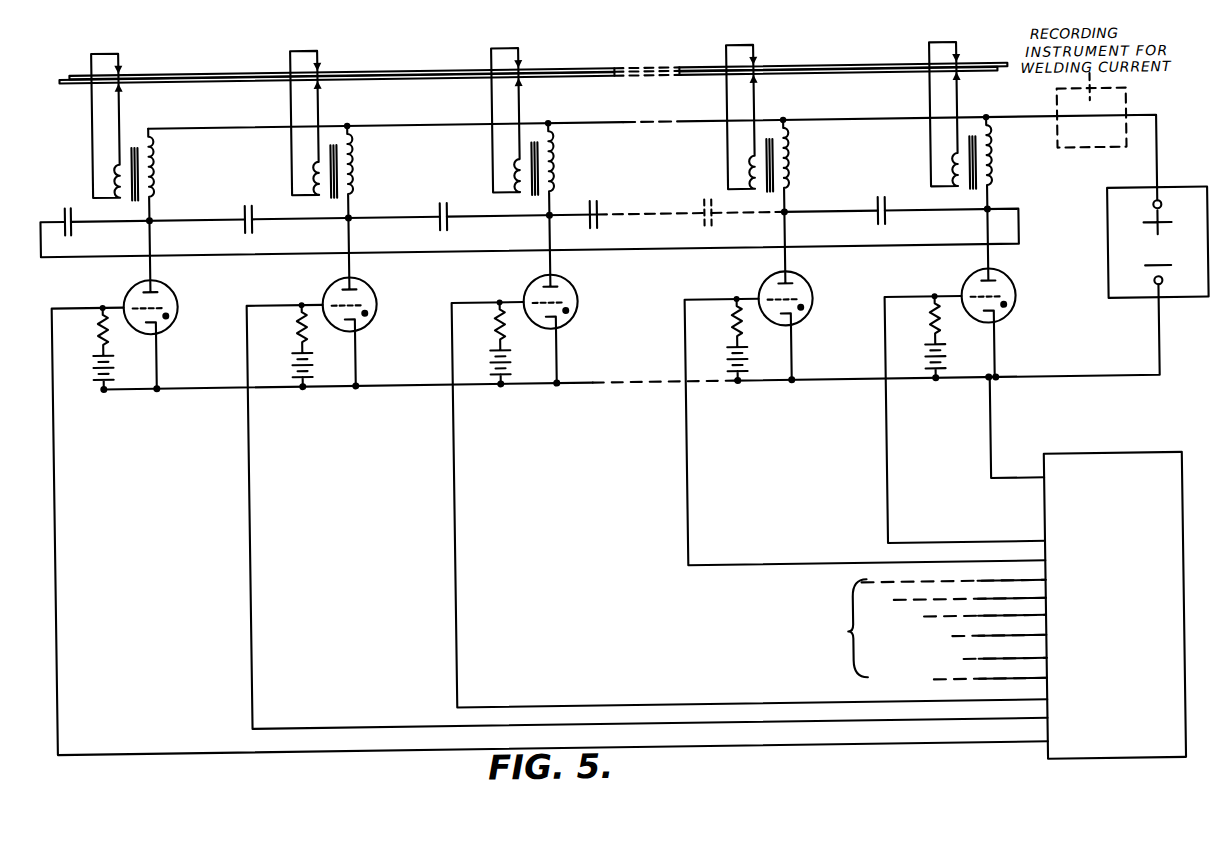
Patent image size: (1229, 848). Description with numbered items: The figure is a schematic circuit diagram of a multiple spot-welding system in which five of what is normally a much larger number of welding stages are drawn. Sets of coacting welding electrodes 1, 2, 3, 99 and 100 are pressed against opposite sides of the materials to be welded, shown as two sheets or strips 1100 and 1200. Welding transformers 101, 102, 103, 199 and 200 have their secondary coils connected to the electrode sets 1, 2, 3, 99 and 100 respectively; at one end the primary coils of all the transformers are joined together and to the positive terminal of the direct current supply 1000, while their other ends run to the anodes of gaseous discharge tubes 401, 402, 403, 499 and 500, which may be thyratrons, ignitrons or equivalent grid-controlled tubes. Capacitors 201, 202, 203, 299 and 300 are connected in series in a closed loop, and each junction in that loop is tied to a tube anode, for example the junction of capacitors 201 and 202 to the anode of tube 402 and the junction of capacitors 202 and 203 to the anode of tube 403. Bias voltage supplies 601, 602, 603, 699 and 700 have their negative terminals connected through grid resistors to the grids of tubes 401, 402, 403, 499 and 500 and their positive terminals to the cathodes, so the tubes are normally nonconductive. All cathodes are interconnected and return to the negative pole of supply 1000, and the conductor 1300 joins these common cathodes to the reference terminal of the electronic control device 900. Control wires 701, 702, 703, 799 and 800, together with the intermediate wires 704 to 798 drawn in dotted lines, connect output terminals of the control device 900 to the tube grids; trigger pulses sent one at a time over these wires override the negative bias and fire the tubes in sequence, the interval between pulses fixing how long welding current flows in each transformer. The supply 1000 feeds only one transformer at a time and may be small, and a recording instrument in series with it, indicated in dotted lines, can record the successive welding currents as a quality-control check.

The set of coacting welding electrodes 1 is at (128, 79).
The set of coacting welding electrodes 2 is at (327, 79).
The set of coacting welding electrodes 3 is at (528, 79).
The set of coacting welding electrodes 99 is at (763, 79).
The set of coacting welding electrodes 100 is at (966, 79).
The sheet or strip 1100 is at (206, 69).
The sheet or strip 1200 is at (240, 76).
The welding transformer 101 is at (154, 131).
The welding transformer 102 is at (353, 131).
The welding transformer 103 is at (554, 131).
The welding transformer 199 is at (789, 131).
The welding transformer 200 is at (992, 131).
The capacitor 300 is at (67, 200).
The capacitor 201 is at (247, 200).
The capacitor 202 is at (442, 200).
The capacitor 203 is at (598, 200).
The capacitor 299 is at (880, 200).
The gaseous discharge tube 401 is at (166, 290).
The gaseous discharge tube 402 is at (368, 290).
The gaseous discharge tube 403 is at (571, 291).
The gaseous discharge tube 499 is at (806, 291).
The gaseous discharge tube 500 is at (1006, 289).
The bias voltage supply 601 is at (116, 361).
The bias voltage supply 602 is at (330, 353).
The bias voltage supply 603 is at (516, 366).
The bias voltage supply 699 is at (753, 370).
The bias voltage supply 700 is at (949, 362).
The control wire 701 is at (54, 475).
The control wire 702 is at (249, 472).
The control wire 703 is at (454, 473).
The control wire 704 is at (927, 630).
The control wire 798 is at (837, 628).
The control wire 799 is at (688, 476).
The control wire 800 is at (887, 479).
The electronic control device 900 is at (1133, 468).
The direct current supply 1000 is at (1120, 206).
The conductor 1300 is at (992, 411).